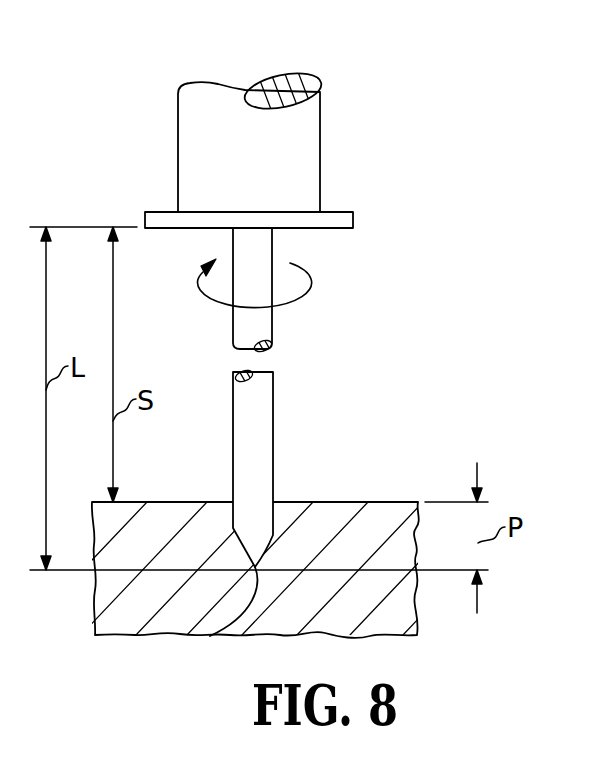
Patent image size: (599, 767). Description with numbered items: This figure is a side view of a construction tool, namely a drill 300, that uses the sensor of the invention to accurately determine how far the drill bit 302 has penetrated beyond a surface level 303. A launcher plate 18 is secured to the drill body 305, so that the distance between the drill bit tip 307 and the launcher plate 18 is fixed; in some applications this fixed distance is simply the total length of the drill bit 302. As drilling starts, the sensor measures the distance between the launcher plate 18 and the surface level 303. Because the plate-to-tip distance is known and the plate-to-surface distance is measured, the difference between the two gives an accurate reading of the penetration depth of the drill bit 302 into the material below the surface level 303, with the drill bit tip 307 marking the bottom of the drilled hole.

The drill 300 is at (360, 114).
The drill body 305 is at (178, 147).
The launcher plate 18 is at (333, 212).
The drill bit 302 is at (273, 448).
The surface level 303 is at (335, 502).
The drill bit tip 307 is at (206, 636).